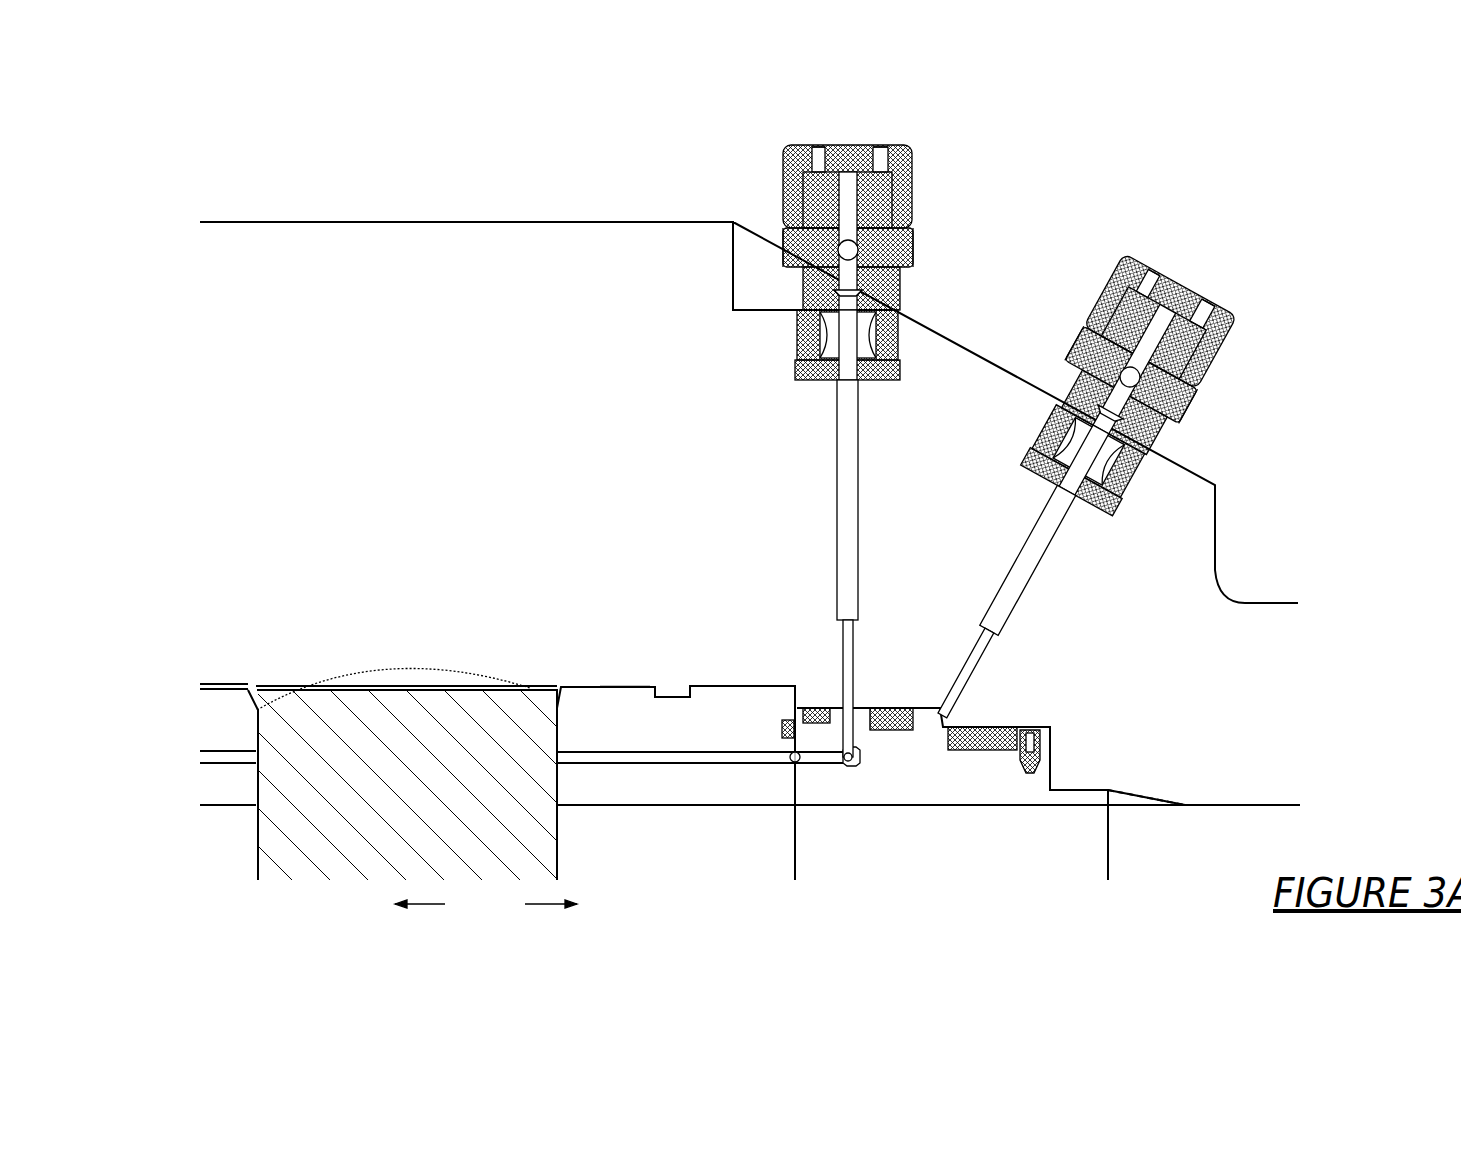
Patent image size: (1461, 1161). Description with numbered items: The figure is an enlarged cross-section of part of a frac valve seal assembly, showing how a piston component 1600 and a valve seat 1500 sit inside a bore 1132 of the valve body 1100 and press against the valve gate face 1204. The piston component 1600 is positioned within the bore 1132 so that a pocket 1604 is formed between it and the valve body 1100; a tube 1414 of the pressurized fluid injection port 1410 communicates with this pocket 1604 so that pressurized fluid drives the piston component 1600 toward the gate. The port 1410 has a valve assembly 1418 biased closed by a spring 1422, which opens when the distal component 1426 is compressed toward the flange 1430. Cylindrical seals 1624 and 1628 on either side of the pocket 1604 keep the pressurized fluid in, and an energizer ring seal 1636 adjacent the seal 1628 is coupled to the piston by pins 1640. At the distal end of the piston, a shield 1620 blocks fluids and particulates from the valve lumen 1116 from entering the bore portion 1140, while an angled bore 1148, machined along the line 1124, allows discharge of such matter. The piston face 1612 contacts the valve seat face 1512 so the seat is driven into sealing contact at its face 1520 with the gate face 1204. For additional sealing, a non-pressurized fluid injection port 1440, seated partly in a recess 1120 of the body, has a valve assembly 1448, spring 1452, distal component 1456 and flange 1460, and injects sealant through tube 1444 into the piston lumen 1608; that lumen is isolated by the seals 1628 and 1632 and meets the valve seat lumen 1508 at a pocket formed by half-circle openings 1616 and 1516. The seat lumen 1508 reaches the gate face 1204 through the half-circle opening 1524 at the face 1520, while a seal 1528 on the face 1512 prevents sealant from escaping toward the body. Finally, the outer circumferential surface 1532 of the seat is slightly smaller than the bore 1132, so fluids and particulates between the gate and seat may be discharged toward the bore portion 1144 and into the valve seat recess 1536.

The valve body 1100 is at (267, 223).
The valve lumen 1116 is at (412, 792).
The recess 1120 is at (772, 308).
The line 1124 is at (1143, 800).
The bore 1132 is at (575, 681).
The portion of bore 1140 is at (1058, 772).
The portion of bore 1144 is at (553, 695).
The angled cylindrical bore 1148 is at (1120, 810).
The valve gate face 1204 is at (557, 718).
The pressurized fluid injection port 1410 is at (1237, 313).
The tube 1414 is at (1030, 568).
The valve assembly 1418 is at (1130, 363).
The spring 1422 is at (1117, 420).
The distal component 1426 is at (1185, 278).
The flange 1430 is at (1197, 397).
The non-pressurized fluid injection port 1440 is at (912, 158).
The tube 1444 is at (852, 432).
The valve assembly 1448 is at (858, 250).
The spring 1452 is at (862, 293).
The distal component 1456 is at (843, 146).
The flange 1460 is at (912, 245).
The valve seat 1500 is at (705, 805).
The valve seat lumen 1508 is at (666, 758).
The face 1512 is at (793, 762).
The cylindrical half-circle opening 1516 is at (790, 757).
The face 1520 is at (556, 780).
The cylindrical half-circle opening 1524 is at (553, 753).
The cylindrical seal 1528 is at (784, 720).
The outer circumferential surface 1532 is at (627, 683).
The valve seat recess 1536 is at (677, 693).
The piston component 1600 is at (977, 806).
The pocket 1604 is at (940, 713).
The piston lumen 1608 is at (851, 761).
The face 1612 is at (799, 763).
The cylindrical half-circle opening 1616 is at (801, 763).
The shield 1620 is at (1087, 805).
The cylindrical seal 1624 is at (982, 727).
The cylindrical seal 1628 is at (893, 705).
The circumferential seal 1632 is at (818, 709).
The cylindrical seal 1636 is at (1048, 728).
The pin 1640 is at (1037, 756).